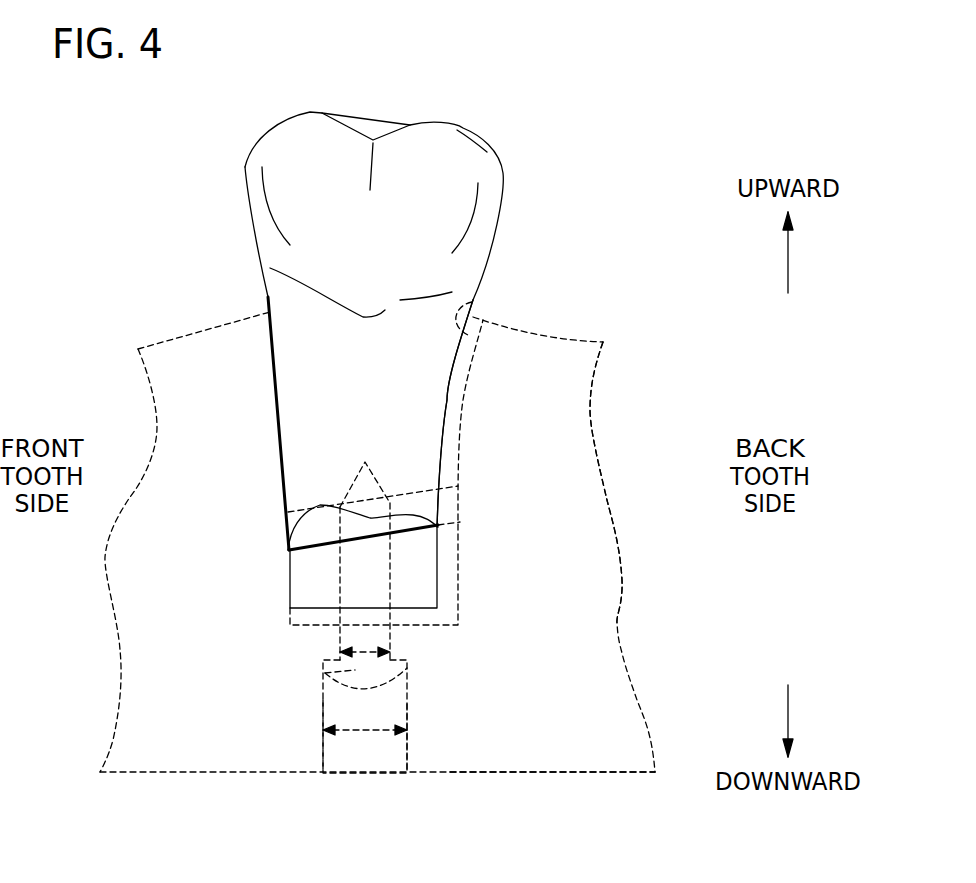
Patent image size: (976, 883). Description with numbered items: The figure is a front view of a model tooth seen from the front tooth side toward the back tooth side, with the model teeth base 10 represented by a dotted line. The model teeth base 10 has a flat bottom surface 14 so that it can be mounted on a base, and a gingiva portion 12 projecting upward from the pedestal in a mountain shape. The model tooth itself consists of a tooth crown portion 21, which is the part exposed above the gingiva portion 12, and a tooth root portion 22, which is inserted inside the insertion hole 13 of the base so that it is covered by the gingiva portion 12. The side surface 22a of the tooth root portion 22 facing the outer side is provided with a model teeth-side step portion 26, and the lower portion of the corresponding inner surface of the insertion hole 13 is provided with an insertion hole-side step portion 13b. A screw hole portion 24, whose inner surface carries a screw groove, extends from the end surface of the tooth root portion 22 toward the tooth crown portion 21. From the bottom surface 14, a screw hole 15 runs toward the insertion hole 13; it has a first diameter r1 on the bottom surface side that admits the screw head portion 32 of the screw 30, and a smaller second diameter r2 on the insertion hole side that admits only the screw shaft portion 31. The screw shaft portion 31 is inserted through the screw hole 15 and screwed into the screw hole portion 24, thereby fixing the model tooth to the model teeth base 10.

The model teeth base 10 is at (409, 542).
The gingiva portion 12 is at (653, 482).
The bottom surface 14 is at (552, 820).
The screw hole 15 is at (373, 765).
The tooth crown portion 21 is at (421, 214).
The insertion hole 13 is at (422, 450).
The tooth root portion 22 is at (578, 413).
The side surface 22a is at (578, 413).
The insertion hole-side step portion 13b is at (489, 518).
The model teeth-side step portion 26 is at (282, 665).
The screw shaft portion 31 is at (285, 664).
The screw head portion 32 is at (309, 769).
The screw 30 is at (337, 779).
The screw hole portion 24 is at (426, 643).
The first diameter r1 is at (365, 775).
The second diameter r2 is at (396, 736).